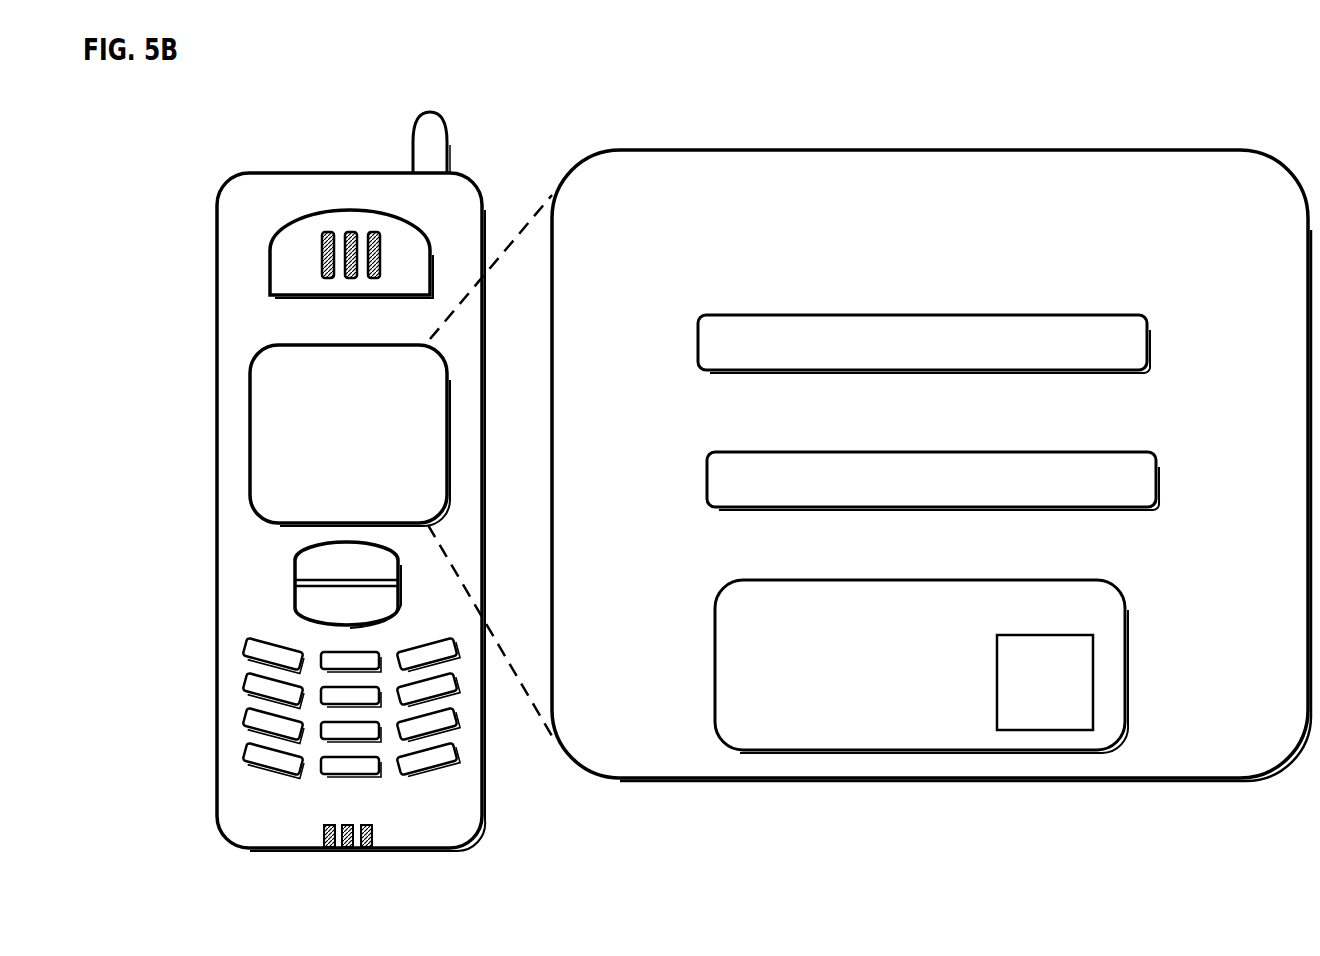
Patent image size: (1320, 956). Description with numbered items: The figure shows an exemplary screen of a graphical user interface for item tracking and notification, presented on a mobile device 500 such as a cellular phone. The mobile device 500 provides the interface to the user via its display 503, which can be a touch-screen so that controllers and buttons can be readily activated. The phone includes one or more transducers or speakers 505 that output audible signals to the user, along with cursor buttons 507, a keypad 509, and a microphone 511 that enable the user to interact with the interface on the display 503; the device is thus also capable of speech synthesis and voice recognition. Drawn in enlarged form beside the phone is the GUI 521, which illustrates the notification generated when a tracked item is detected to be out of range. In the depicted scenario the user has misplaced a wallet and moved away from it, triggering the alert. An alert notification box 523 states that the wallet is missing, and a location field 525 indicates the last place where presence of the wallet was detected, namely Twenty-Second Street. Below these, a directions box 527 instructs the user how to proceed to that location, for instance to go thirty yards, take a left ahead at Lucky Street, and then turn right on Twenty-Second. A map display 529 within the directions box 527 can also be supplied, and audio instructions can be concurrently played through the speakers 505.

The mobile device 500 is at (483, 222).
The display 503 is at (251, 405).
The transducers 505 is at (282, 263).
The cursor buttons 507 is at (295, 572).
The keypad 509 is at (206, 775).
The microphone 511 is at (315, 836).
The GUI 521 is at (776, 148).
The alert notification box 523 is at (698, 330).
The location field 525 is at (707, 468).
The directions box 527 is at (1095, 580).
The map display 529 is at (1093, 663).